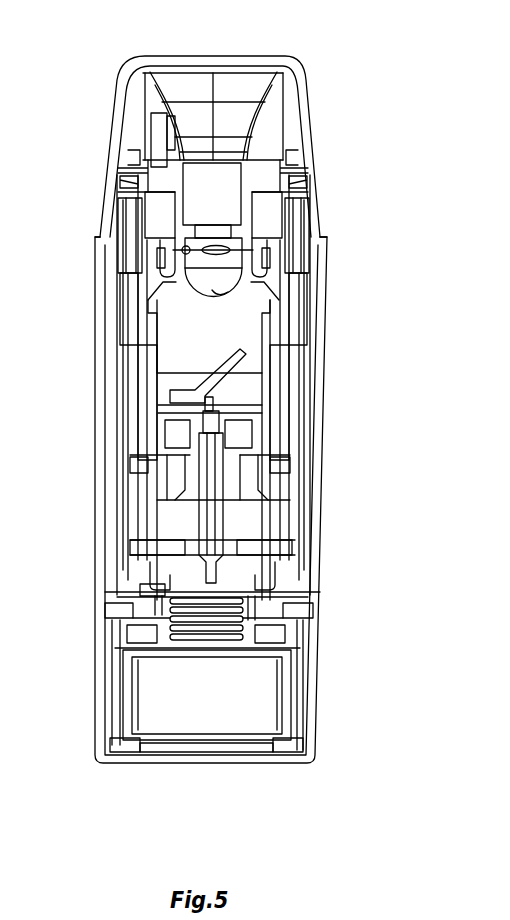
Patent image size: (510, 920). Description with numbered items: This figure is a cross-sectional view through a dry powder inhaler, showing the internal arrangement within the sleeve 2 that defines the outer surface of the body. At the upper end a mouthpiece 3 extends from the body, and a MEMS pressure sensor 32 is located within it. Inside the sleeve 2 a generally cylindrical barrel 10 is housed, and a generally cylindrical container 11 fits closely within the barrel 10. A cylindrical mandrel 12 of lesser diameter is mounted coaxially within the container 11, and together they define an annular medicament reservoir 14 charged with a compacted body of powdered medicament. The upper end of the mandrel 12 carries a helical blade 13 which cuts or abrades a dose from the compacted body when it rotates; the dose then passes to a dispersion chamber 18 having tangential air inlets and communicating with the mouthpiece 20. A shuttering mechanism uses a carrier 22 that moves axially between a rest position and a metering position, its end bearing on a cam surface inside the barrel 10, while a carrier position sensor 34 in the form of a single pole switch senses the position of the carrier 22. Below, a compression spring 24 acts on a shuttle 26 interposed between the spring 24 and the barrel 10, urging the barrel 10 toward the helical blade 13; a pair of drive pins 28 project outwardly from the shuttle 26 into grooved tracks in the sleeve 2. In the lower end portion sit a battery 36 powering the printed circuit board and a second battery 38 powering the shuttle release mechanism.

The sleeve 2 is at (97, 437).
The mouthpiece 3 is at (232, 103).
The barrel 10 is at (110, 498).
The container 11 is at (122, 301).
The mandrel 12 is at (270, 372).
The helical blade 13 is at (137, 346).
The medicament reservoir 14 is at (140, 373).
The dispersion chamber 18 is at (220, 281).
The mouthpiece 20 is at (292, 118).
The carrier 22 is at (258, 411).
The compression spring 24 is at (232, 357).
The shuttle 26 is at (145, 593).
The drive pins 28 is at (110, 612).
The MEMS pressure sensor 32 is at (158, 130).
The carrier position sensor 34 is at (210, 468).
The battery 36 is at (207, 752).
The second battery 38 is at (260, 695).